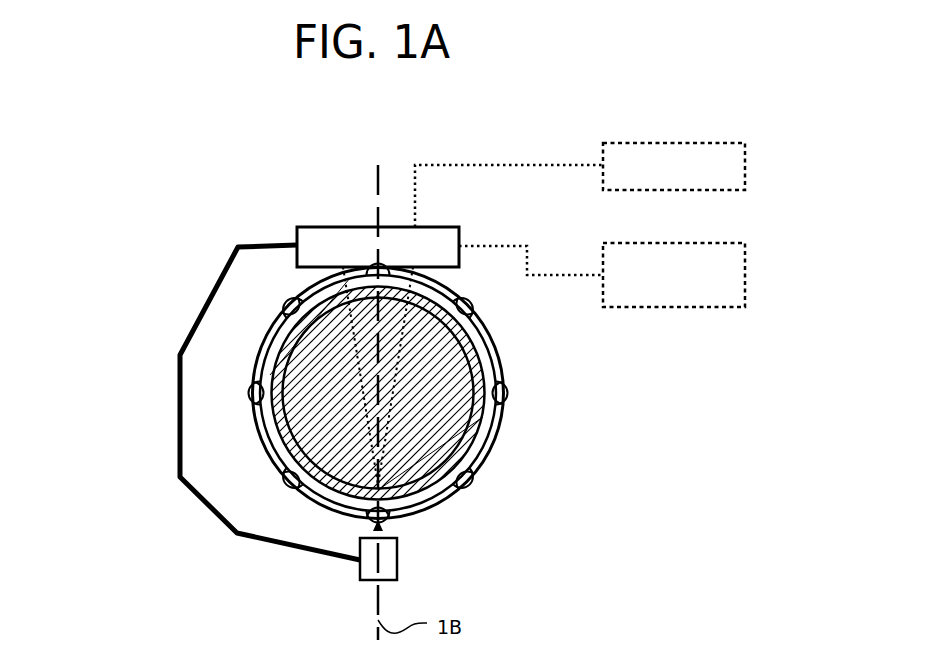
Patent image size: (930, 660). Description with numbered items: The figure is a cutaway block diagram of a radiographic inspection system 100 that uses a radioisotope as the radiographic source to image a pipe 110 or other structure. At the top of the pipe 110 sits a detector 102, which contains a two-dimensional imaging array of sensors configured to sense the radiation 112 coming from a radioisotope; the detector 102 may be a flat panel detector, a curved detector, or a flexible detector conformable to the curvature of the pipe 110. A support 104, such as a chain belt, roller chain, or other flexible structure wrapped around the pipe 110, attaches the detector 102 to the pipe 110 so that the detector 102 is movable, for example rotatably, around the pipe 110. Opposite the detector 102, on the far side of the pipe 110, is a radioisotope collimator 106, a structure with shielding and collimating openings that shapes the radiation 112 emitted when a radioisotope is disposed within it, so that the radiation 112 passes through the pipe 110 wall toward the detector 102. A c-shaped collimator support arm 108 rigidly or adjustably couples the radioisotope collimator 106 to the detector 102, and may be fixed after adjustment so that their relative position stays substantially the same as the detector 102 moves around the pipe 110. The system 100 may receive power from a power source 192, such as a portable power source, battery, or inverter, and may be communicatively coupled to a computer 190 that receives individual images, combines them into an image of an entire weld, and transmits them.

The radiographic inspection system 100 is at (243, 205).
The detector 102 is at (460, 230).
The support 104 is at (506, 358).
The radioisotope collimator 106 is at (397, 560).
The collimator support arm 108 is at (177, 422).
The pipe 110 is at (472, 424).
The radiation 112 is at (397, 400).
The computer 190 is at (745, 170).
The power source 192 is at (745, 270).